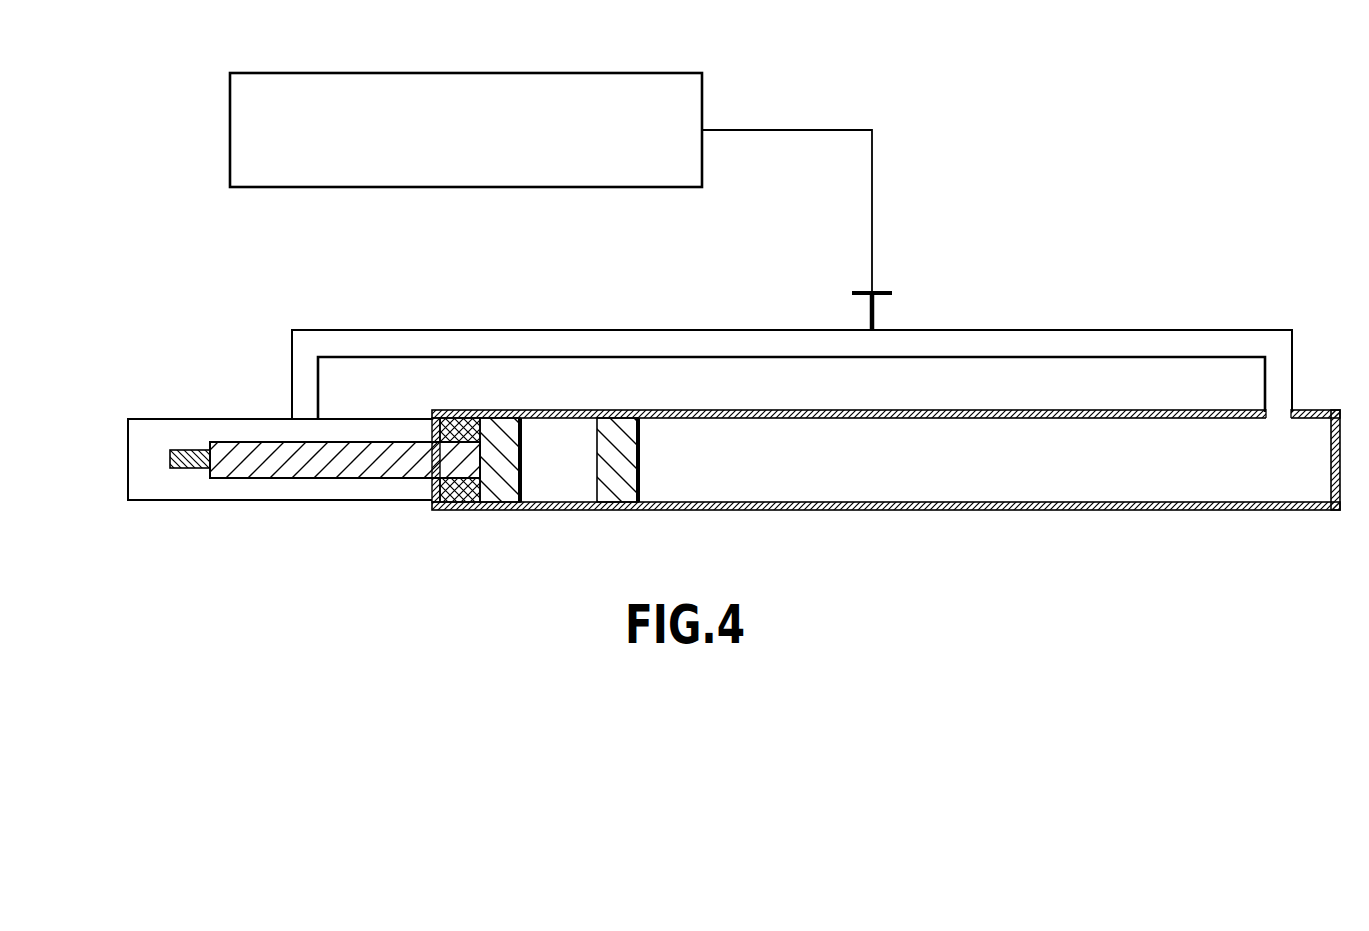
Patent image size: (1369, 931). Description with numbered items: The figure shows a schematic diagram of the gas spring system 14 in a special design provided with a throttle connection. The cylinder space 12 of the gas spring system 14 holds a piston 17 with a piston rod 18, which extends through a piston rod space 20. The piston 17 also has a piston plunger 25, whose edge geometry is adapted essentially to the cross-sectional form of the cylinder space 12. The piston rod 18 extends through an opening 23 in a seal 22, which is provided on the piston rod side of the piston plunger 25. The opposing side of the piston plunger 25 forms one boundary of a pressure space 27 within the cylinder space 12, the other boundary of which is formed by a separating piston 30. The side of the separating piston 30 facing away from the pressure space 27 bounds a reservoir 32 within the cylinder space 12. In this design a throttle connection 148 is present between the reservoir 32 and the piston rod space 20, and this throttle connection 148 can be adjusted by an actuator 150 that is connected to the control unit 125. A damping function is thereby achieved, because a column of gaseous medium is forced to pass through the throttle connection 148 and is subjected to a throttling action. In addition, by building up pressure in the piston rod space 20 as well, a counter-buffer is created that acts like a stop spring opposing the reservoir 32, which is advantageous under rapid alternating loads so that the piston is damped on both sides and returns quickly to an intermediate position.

The control unit 125 is at (463, 90).
The actuator 150 is at (893, 294).
The throttle connection 148 is at (1197, 340).
The cylinder space 12 is at (983, 510).
The gas spring system 14 is at (1198, 522).
The reservoir 32 is at (870, 490).
The piston rod space 20 is at (165, 482).
The piston rod 18 is at (272, 468).
The opening 23 is at (434, 497).
The piston 17 is at (476, 502).
The seal 22 is at (440, 482).
The piston plunger 25 is at (505, 496).
The pressure space 27 is at (582, 488).
The separating piston 30 is at (627, 477).